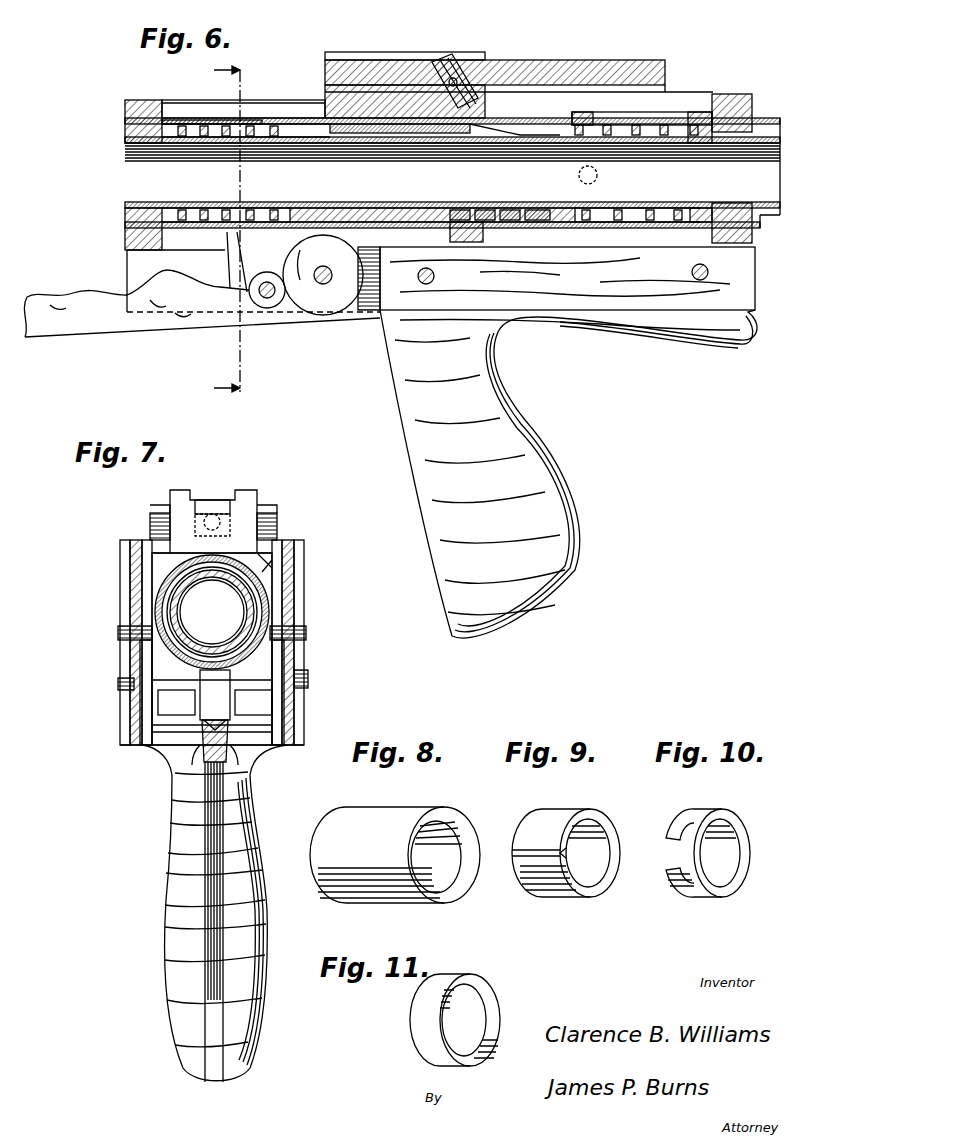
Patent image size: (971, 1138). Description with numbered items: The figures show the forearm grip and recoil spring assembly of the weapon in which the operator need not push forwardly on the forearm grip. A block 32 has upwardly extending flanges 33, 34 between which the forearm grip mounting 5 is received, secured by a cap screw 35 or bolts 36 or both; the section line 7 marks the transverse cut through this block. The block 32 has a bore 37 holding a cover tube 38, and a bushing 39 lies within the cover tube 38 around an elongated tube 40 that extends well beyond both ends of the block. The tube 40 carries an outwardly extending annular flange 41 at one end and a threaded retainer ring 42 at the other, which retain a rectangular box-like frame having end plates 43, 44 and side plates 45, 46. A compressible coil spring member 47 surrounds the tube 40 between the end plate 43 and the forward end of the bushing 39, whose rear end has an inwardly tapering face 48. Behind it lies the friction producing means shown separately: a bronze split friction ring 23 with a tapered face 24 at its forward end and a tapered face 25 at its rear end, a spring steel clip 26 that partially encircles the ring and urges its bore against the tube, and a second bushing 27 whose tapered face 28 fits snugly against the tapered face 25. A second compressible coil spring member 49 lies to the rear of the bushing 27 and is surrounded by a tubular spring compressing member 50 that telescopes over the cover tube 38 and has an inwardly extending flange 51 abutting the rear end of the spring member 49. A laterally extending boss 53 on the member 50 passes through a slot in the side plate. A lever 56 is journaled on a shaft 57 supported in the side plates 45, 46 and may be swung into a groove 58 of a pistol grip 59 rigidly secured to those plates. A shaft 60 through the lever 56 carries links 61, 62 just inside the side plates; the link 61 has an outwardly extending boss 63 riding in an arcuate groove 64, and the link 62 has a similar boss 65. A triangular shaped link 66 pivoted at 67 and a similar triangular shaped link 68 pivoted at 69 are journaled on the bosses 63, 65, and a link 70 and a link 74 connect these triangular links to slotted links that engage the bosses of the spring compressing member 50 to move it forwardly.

In FIG. 6, the forearm grip mounting 5 is at (578, 60).
In FIG. 7, the forearm grip mounting 5 is at (228, 500).
In FIG. 6, the section line 7- 7 is at (234, 232).
In FIG. 6, the split friction ring 23 is at (500, 140).
In FIG. 9, the split friction ring 23 is at (560, 895).
In FIG. 6, the tapered face 24 is at (468, 210).
In FIG. 9, the tapered face 24 is at (518, 880).
In FIG. 6, the tapered face 25 is at (526, 210).
In FIG. 9, the tapered face 25 is at (580, 895).
In FIG. 6, the spring steel clip 26 is at (496, 210).
In FIG. 10, the spring steel clip 26 is at (696, 896).
In FIG. 6, the second bushing 27 is at (556, 210).
In FIG. 11, the second bushing 27 is at (498, 1014).
In FIG. 6, the tapered face 28 is at (536, 224).
In FIG. 11, the tapered face 28 is at (418, 1034).
In FIG. 6, the block 32 is at (325, 95).
In FIG. 7, the block 32 is at (298, 552).
In FIG. 6, the flange 33 is at (432, 52).
In FIG. 7, the flange 33 is at (178, 500).
In FIG. 7, the flange 34 is at (258, 500).
In FIG. 6, the cap screw 35 is at (466, 62).
In FIG. 7, the cap screw 35 is at (206, 500).
In FIG. 6, the bolts 36 is at (432, 66).
In FIG. 7, the bolts 36 is at (274, 530).
In FIG. 6, the bore 37 is at (325, 108).
In FIG. 6, the cover tube 38 is at (515, 115).
In FIG. 6, the bushing 39 is at (434, 140).
In FIG. 7, the bushing 39 is at (212, 612).
In FIG. 8, the bushing 39 is at (386, 898).
In FIG. 6, the elongated tube 40 is at (666, 148).
In FIG. 7, the elongated tube 40 is at (248, 620).
In FIG. 6, the annular flange 41 is at (125, 220).
In FIG. 6, the threaded retainer ring 42 is at (752, 222).
In FIG. 6, the end plate 43 is at (125, 110).
In FIG. 6, the end plate 44 is at (752, 106).
In FIG. 7, the side plate 45 is at (284, 545).
In FIG. 6, the side plate 46 is at (667, 100).
In FIG. 7, the side plate 46 is at (136, 540).
In FIG. 6, the compressible coil spring member 47 is at (202, 122).
In FIG. 7, the compressible coil spring member 47 is at (246, 642).
In FIG. 6, the inwardly tapering face 48 is at (447, 250).
In FIG. 8, the inwardly tapering face 48 is at (462, 885).
In FIG. 6, the compressible coil spring member 49 is at (640, 112).
In FIG. 6, the tubular spring compressing member 50 is at (686, 112).
In FIG. 6, the inwardly extending flange 51 is at (700, 112).
In FIG. 6, the boss 53 is at (598, 180).
In FIG. 6, the lever 56 is at (94, 325).
In FIG. 6, the shaft 57 is at (323, 292).
In FIG. 7, the shaft 57 is at (197, 712).
In FIG. 7, the groove 58 is at (222, 938).
In FIG. 6, the pistol grip 59 is at (540, 462).
In FIG. 7, the pistol grip 59 is at (168, 914).
In FIG. 6, the shaft 60 is at (267, 302).
In FIG. 7, the shaft 60 is at (258, 760).
In FIG. 7, the link 61 is at (284, 698).
In FIG. 6, the link 62 is at (248, 254).
In FIG. 7, the link 62 is at (148, 658).
In FIG. 7, the boss 63 is at (302, 616).
In FIG. 7, the arcuate groove 64 is at (304, 728).
In FIG. 7, the boss 65 is at (120, 630).
In FIG. 7, the triangular shaped link 66 is at (304, 640).
In FIG. 7, the pivot 67 is at (306, 682).
In FIG. 7, the triangular shaped link 68 is at (122, 596).
In FIG. 7, the pivot 69 is at (126, 680).
In FIG. 7, the link 70 is at (302, 580).
In FIG. 7, the link 74 is at (120, 548).